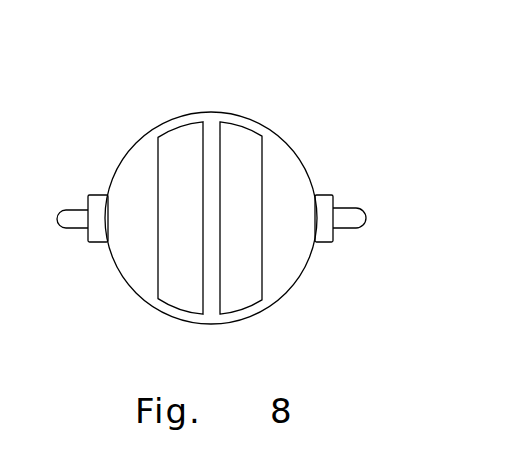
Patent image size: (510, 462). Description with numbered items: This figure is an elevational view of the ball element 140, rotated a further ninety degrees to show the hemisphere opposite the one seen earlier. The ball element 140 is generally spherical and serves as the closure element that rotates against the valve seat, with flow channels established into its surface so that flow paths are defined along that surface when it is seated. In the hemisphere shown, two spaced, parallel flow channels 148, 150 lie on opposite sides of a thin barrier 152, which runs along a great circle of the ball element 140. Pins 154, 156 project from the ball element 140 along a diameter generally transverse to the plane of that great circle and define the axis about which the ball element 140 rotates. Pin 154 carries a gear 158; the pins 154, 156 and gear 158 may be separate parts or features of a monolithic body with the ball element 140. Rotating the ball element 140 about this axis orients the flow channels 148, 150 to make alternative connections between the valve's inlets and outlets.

The ball element 140 is at (135, 165).
The flow channel 148 is at (182, 140).
The flow channel 150 is at (248, 142).
The thin barrier 152 is at (213, 140).
The pin 154 is at (362, 212).
The pin 156 is at (67, 212).
The gear 158 is at (323, 240).